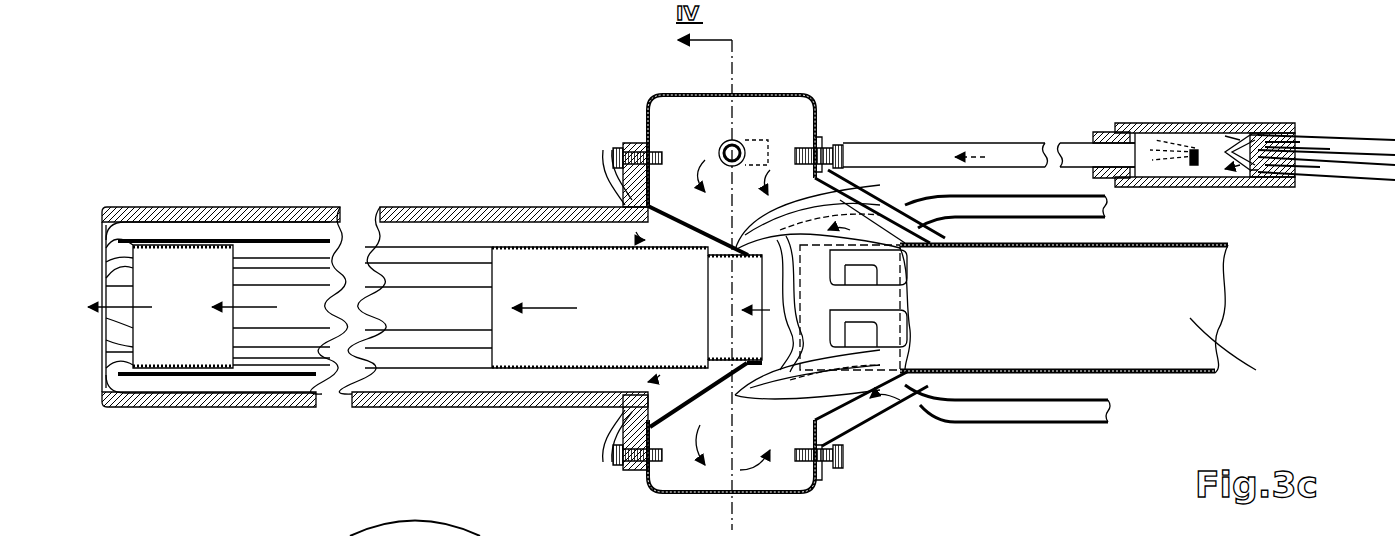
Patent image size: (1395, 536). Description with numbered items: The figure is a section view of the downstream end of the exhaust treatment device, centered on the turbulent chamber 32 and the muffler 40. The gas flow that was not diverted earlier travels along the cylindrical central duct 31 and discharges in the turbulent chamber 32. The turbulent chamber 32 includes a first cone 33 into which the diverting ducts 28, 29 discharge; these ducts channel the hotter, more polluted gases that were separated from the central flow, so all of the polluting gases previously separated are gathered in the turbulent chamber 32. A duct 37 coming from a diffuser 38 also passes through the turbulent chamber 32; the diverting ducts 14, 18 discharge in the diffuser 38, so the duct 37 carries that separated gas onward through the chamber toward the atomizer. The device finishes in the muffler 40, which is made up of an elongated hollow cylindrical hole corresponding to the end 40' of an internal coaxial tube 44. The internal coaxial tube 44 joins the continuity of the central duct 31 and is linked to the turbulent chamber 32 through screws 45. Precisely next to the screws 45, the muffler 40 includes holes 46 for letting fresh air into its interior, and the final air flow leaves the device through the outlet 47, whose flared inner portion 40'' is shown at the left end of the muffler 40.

The diverting duct 14 is at (1322, 142).
The diverting duct 18 is at (1322, 178).
The diverting duct 28 is at (1090, 208).
The diverting duct 29 is at (1072, 408).
The cylindrical central duct 31 is at (1190, 318).
The turbulent chamber 32 is at (767, 90).
The first cone 33 is at (850, 182).
The duct 37 is at (925, 152).
The diffuser 38 is at (1158, 124).
The outlet muffler 40 is at (375, 275).
The end of the internal coaxial tube 40' is at (551, 438).
The inner bellmouth tube 40'' is at (205, 348).
The internal coaxial tube 44 is at (545, 345).
The screws 45 is at (617, 152).
The holes 46 is at (623, 194).
The outlet 47 is at (99, 246).